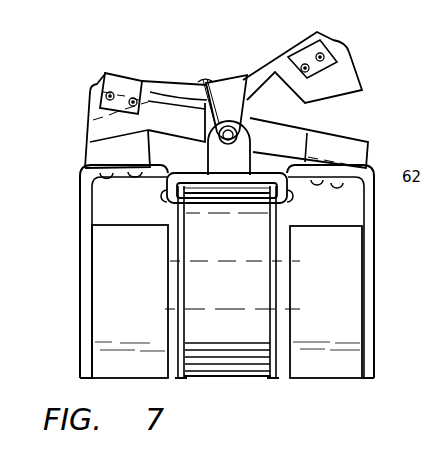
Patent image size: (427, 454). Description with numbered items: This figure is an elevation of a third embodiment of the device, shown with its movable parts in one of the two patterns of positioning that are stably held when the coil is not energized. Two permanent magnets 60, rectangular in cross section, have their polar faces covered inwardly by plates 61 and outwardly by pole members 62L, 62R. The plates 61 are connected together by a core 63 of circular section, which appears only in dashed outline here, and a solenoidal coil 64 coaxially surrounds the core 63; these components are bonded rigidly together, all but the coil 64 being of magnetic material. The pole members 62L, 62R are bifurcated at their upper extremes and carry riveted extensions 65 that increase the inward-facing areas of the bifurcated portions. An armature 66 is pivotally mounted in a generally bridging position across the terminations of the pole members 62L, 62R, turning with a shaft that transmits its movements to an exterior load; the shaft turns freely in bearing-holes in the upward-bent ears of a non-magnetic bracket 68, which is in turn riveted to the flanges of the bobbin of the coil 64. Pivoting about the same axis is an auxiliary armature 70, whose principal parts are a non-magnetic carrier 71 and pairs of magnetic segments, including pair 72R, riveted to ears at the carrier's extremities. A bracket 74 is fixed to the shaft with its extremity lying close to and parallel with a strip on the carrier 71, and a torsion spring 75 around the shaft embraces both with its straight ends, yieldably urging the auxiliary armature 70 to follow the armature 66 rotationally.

The permanent magnets 60 is at (141, 300).
The plates 61 is at (176, 229).
The pole member 62L is at (77, 198).
The pole member 62R is at (372, 296).
The core 63 is at (229, 261).
The solenoidal coil 64 is at (233, 330).
The extensions 65 is at (103, 152).
The armature 66 is at (168, 118).
The bracket 68 is at (290, 182).
The auxiliary armature 70 is at (232, 74).
The carrier 71 is at (162, 83).
The pair of magnetic segments 72R is at (333, 92).
The bracket 74 is at (240, 112).
The torsion spring 75 is at (207, 84).